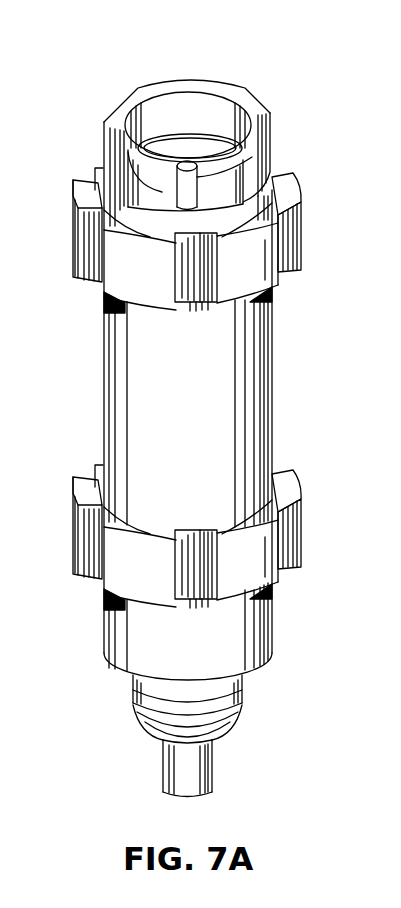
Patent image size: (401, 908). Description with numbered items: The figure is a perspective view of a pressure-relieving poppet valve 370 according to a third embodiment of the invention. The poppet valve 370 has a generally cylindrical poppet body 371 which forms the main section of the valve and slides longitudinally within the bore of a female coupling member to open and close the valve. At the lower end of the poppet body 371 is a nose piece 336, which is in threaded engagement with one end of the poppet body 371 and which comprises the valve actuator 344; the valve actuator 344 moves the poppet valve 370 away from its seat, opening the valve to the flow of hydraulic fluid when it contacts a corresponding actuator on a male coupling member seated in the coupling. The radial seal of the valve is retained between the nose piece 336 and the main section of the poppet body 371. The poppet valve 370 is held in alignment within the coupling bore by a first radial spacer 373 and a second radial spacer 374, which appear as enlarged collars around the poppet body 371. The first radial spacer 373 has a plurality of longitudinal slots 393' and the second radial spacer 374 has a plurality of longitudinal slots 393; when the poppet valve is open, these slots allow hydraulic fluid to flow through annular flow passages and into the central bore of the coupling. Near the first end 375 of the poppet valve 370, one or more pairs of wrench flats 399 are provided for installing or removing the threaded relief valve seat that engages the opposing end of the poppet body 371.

The poppet valve 370 is at (146, 84).
The first end 375 is at (234, 97).
The wrench flats 399 is at (268, 143).
The poppet body 371 is at (270, 392).
The first radial spacer 373 is at (303, 228).
The longitudinal slots 393' is at (189, 245).
The second radial spacer 374 is at (303, 525).
The longitudinal slots 393 is at (186, 530).
The nose piece 336 is at (220, 727).
The valve actuator 344 is at (163, 768).